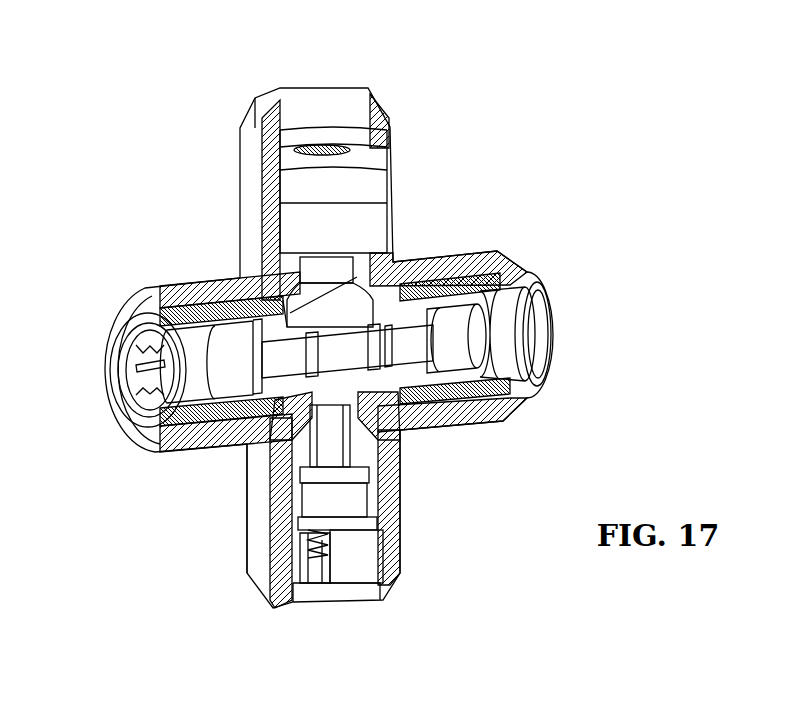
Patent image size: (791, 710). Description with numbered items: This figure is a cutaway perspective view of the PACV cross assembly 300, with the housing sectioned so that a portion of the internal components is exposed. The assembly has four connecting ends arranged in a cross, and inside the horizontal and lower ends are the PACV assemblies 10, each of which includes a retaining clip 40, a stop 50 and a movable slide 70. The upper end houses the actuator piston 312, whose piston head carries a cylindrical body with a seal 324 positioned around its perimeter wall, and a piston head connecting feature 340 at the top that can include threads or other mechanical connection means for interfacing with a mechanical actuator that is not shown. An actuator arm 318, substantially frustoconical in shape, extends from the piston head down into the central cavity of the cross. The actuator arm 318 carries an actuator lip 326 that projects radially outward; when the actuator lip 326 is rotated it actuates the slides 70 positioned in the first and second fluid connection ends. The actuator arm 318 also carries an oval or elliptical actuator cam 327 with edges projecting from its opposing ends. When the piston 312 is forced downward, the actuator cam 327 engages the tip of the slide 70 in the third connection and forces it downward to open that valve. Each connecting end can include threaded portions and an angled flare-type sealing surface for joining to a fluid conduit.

The PACV cross assembly 300 is at (538, 128).
The PACV assembly 10 is at (540, 276).
The retaining clip 40 is at (110, 340).
The stop 50 is at (170, 453).
The slide 70 is at (213, 383).
The actuator piston 312 is at (362, 217).
The actuator arm 318 is at (356, 310).
The seal 324 is at (320, 178).
The actuator lip 326 is at (305, 305).
The actuator cam 327 is at (342, 347).
The piston head connecting feature 340 is at (323, 148).